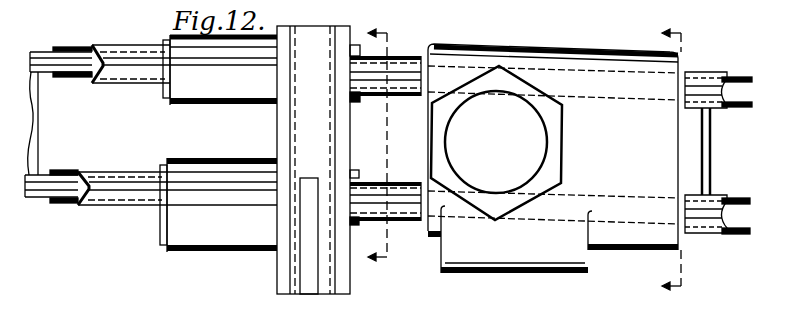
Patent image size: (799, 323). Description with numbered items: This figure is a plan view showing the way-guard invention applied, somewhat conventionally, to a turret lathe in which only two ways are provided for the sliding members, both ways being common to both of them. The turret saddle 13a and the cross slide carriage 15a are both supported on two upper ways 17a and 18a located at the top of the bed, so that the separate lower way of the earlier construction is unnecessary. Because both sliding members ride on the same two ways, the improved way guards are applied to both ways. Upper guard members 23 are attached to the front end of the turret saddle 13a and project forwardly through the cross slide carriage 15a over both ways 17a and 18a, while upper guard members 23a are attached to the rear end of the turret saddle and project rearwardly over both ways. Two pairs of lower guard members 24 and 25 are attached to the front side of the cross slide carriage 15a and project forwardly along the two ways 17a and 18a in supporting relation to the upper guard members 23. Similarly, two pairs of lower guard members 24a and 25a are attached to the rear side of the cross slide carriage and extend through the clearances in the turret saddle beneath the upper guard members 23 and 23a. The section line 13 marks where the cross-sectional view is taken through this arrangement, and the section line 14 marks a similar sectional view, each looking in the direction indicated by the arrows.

The section line 13— 13 is at (376, 146).
The turret saddle 13a is at (607, 251).
The section line 14— 14 is at (665, 163).
The cross slide carriage 15a is at (277, 286).
The upper way 17a is at (40, 53).
The upper way 18a is at (40, 197).
The upper guard member 23 is at (397, 73).
The upper guard member 23a is at (703, 72).
The lower guard member 24 is at (68, 48).
The lower guard member 24a is at (734, 78).
The lower guard member 25 is at (72, 77).
The lower guard member 25a is at (737, 108).